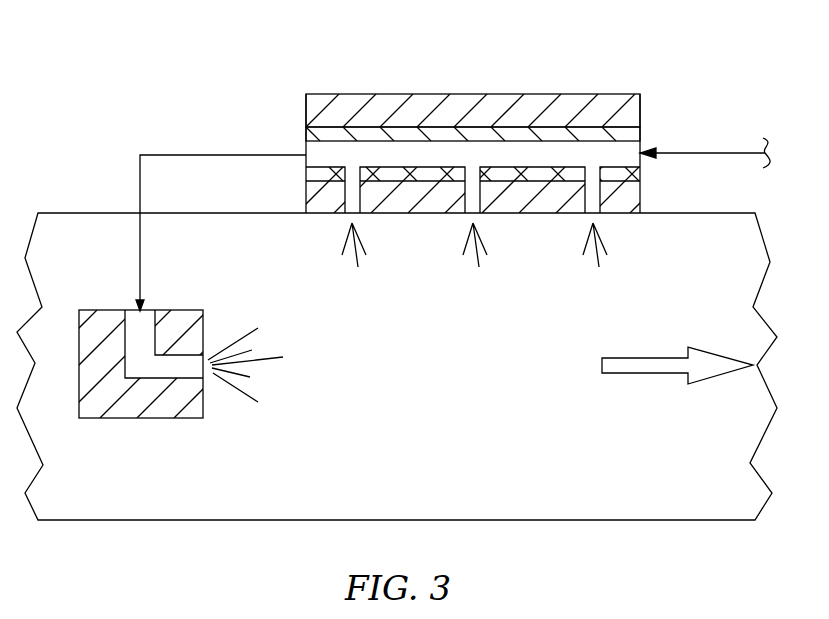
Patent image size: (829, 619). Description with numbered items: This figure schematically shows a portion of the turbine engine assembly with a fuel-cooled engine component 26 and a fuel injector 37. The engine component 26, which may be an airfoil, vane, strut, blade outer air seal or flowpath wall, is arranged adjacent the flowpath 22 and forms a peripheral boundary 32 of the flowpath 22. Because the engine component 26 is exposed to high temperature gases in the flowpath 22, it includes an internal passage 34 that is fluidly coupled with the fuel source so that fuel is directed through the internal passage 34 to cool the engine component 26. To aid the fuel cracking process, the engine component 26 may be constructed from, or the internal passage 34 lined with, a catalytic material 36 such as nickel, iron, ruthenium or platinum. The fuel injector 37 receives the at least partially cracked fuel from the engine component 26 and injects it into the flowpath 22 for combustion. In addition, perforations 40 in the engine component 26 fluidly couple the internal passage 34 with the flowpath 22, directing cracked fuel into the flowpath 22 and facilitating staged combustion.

The flowpath 22 is at (459, 402).
The fuel-cooled engine component 26 is at (494, 94).
The peripheral boundary 32 is at (632, 213).
The internal passage 34 is at (642, 149).
The catalytic material 36 is at (377, 130).
The fuel injector 37 is at (130, 418).
The perforations 40 is at (343, 195).